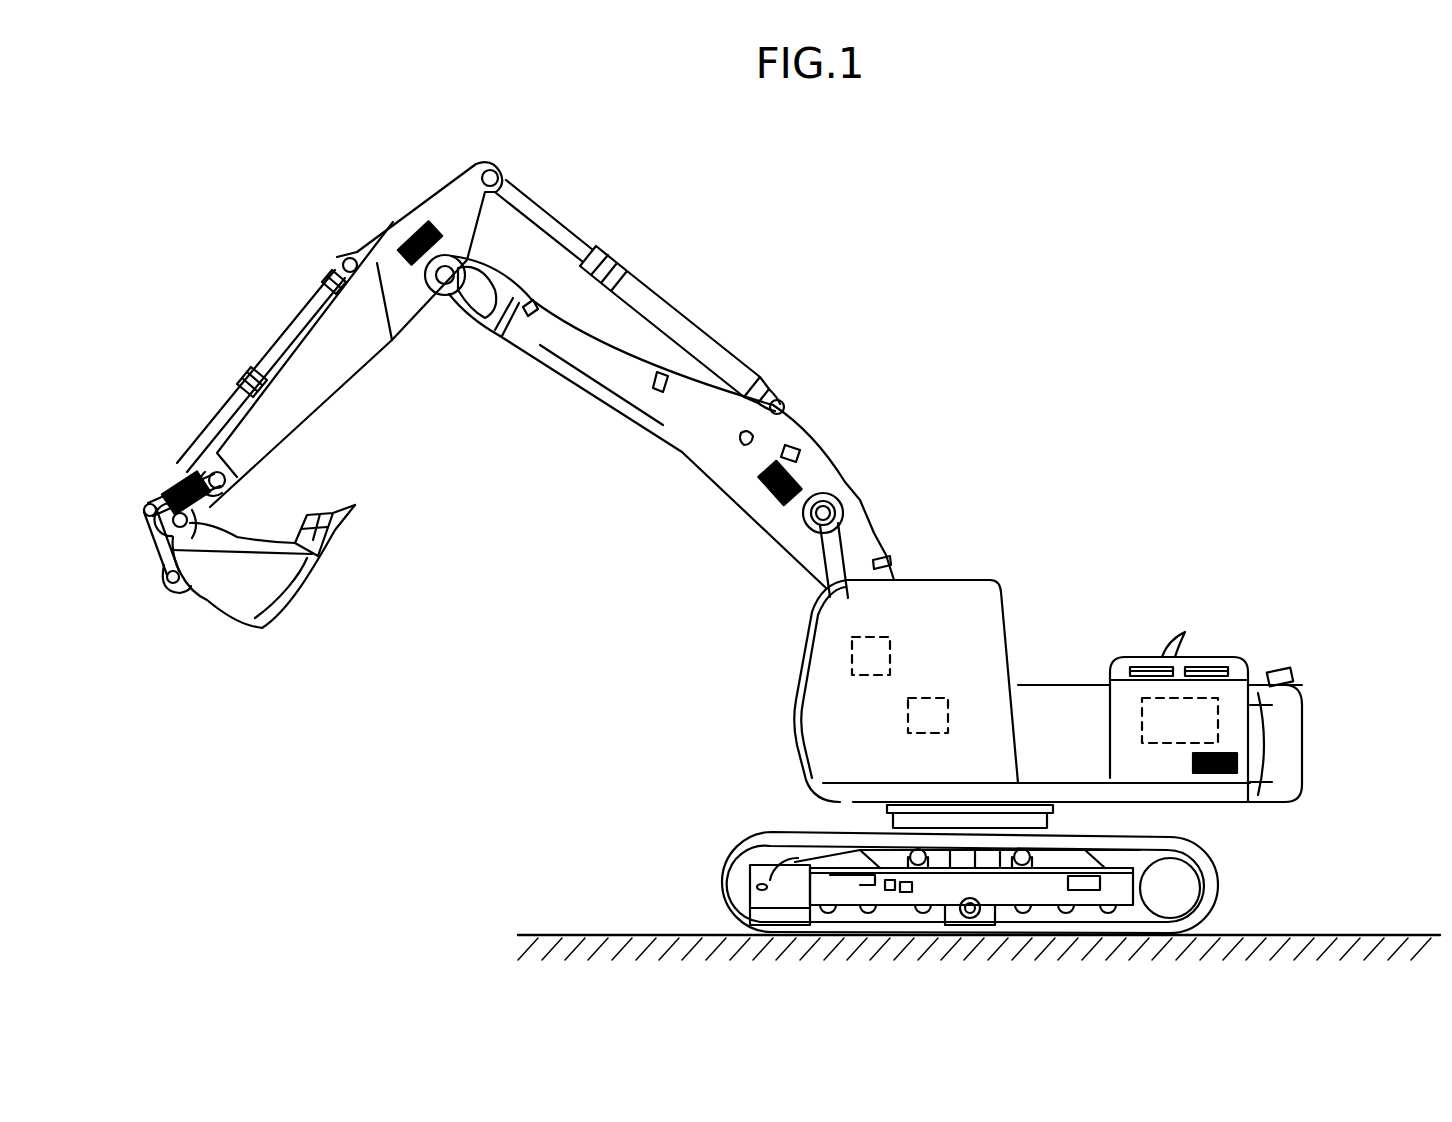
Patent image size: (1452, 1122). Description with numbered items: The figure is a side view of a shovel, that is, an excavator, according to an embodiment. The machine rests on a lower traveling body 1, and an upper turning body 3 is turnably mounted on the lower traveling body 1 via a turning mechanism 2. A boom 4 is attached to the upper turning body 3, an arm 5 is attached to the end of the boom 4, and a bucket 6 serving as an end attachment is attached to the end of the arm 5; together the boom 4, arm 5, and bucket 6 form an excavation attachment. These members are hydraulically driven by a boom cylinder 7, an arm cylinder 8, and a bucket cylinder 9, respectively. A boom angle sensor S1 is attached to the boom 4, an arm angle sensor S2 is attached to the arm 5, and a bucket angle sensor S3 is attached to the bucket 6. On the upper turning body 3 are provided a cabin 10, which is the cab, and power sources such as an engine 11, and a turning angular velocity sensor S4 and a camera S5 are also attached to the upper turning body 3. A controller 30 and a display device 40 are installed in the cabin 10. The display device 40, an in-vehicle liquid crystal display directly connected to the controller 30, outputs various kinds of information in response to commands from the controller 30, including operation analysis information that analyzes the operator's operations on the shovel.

The lower traveling body 1 is at (722, 888).
The turning mechanism 2 is at (1060, 835).
The upper turning body 3 is at (1058, 683).
The boom 4 is at (713, 460).
The arm 5 is at (357, 352).
The bucket 6 is at (245, 612).
The boom cylinder 7 is at (833, 563).
The arm cylinder 8 is at (700, 343).
The bucket cylinder 9 is at (290, 345).
The cabin 10 is at (993, 580).
The engine 11 is at (1205, 662).
The controller 30 is at (928, 733).
The display device 40 is at (850, 655).
The boom angle sensor S1 is at (790, 470).
The arm angle sensor S2 is at (420, 228).
The bucket angle sensor S3 is at (170, 483).
The turning angular velocity sensor S4 is at (1240, 765).
The camera S5 is at (1290, 672).